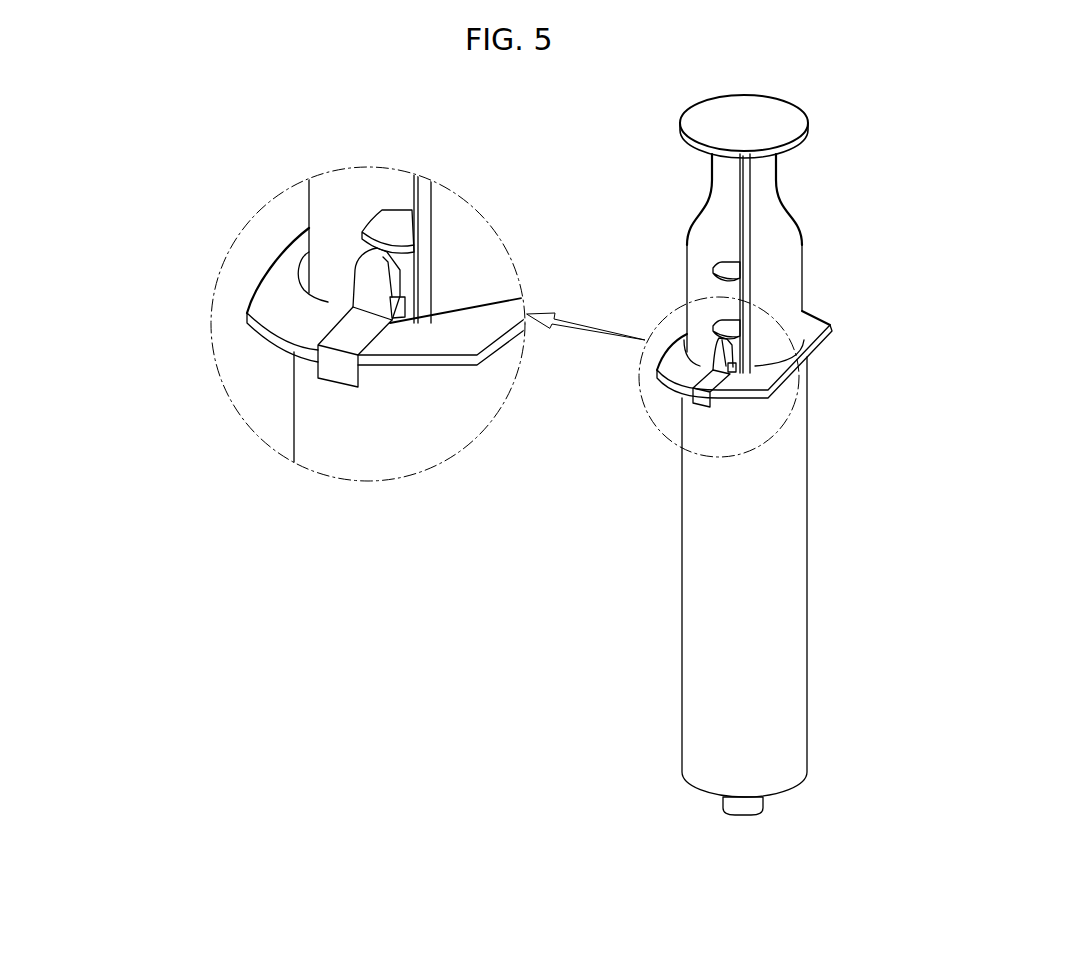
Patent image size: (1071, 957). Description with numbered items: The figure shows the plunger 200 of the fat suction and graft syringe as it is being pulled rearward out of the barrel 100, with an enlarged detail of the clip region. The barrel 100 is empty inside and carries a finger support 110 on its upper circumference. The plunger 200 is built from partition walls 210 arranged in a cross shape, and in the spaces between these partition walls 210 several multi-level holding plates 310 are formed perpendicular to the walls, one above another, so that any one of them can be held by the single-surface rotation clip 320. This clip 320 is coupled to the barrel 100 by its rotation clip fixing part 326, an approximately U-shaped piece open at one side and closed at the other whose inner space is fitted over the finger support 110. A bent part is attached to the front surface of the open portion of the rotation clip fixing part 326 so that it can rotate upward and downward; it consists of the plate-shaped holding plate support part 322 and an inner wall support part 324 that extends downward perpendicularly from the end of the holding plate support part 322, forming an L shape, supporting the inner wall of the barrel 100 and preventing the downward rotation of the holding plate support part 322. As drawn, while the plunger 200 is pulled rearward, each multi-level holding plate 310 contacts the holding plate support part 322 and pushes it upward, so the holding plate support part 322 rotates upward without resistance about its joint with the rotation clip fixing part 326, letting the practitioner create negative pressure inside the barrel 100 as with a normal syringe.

The barrel 100 is at (777, 463).
The finger support 110 is at (800, 373).
The plunger 200 is at (794, 182).
The partition walls 210 is at (745, 222).
The multi-level holding plate 310 is at (728, 328).
The single-surface rotation clip 320 is at (390, 347).
The holding plate support part 322 is at (707, 343).
The inner wall support part 324 is at (713, 393).
The rotation clip fixing part 326 is at (697, 375).